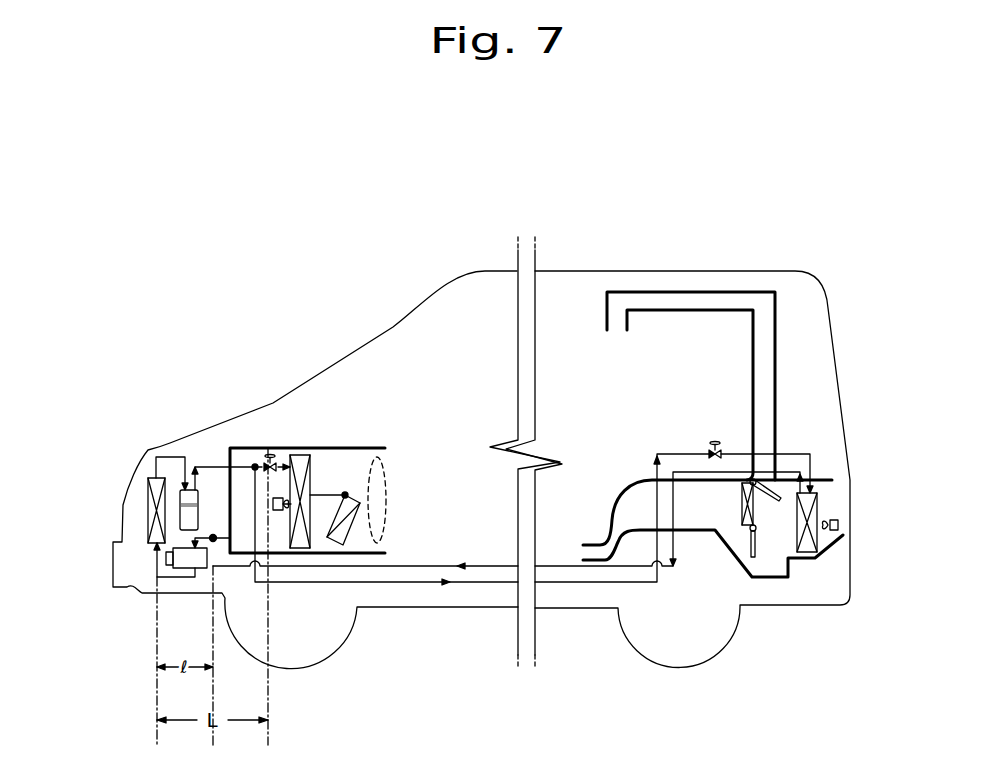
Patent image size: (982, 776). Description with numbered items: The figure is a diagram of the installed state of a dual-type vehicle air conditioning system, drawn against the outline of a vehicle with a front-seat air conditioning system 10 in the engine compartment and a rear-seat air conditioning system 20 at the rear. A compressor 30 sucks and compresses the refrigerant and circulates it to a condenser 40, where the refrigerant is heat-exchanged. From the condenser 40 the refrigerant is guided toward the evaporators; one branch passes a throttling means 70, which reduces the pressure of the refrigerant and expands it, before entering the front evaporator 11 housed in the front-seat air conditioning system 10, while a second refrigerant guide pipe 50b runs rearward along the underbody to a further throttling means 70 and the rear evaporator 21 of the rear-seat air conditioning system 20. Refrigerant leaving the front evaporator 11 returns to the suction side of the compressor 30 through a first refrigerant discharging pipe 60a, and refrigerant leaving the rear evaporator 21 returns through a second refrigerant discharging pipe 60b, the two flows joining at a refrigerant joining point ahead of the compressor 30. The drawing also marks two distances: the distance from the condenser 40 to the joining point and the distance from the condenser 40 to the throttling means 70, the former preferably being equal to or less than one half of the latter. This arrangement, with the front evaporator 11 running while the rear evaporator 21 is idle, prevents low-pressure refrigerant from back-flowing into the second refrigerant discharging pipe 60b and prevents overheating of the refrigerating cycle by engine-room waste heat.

The front-seat air conditioning system 10 is at (222, 440).
The front evaporator 11 is at (293, 456).
The rear-seat air conditioning system 20 is at (799, 599).
The rear evaporator 21 is at (818, 498).
The compressor 30 is at (185, 568).
The condenser 40 is at (149, 503).
The second refrigerant guide pipe 50b is at (418, 583).
The first refrigerant discharging pipe 60a is at (208, 538).
The second refrigerant discharging pipe 60b is at (490, 568).
The throttling means 70 is at (270, 453).